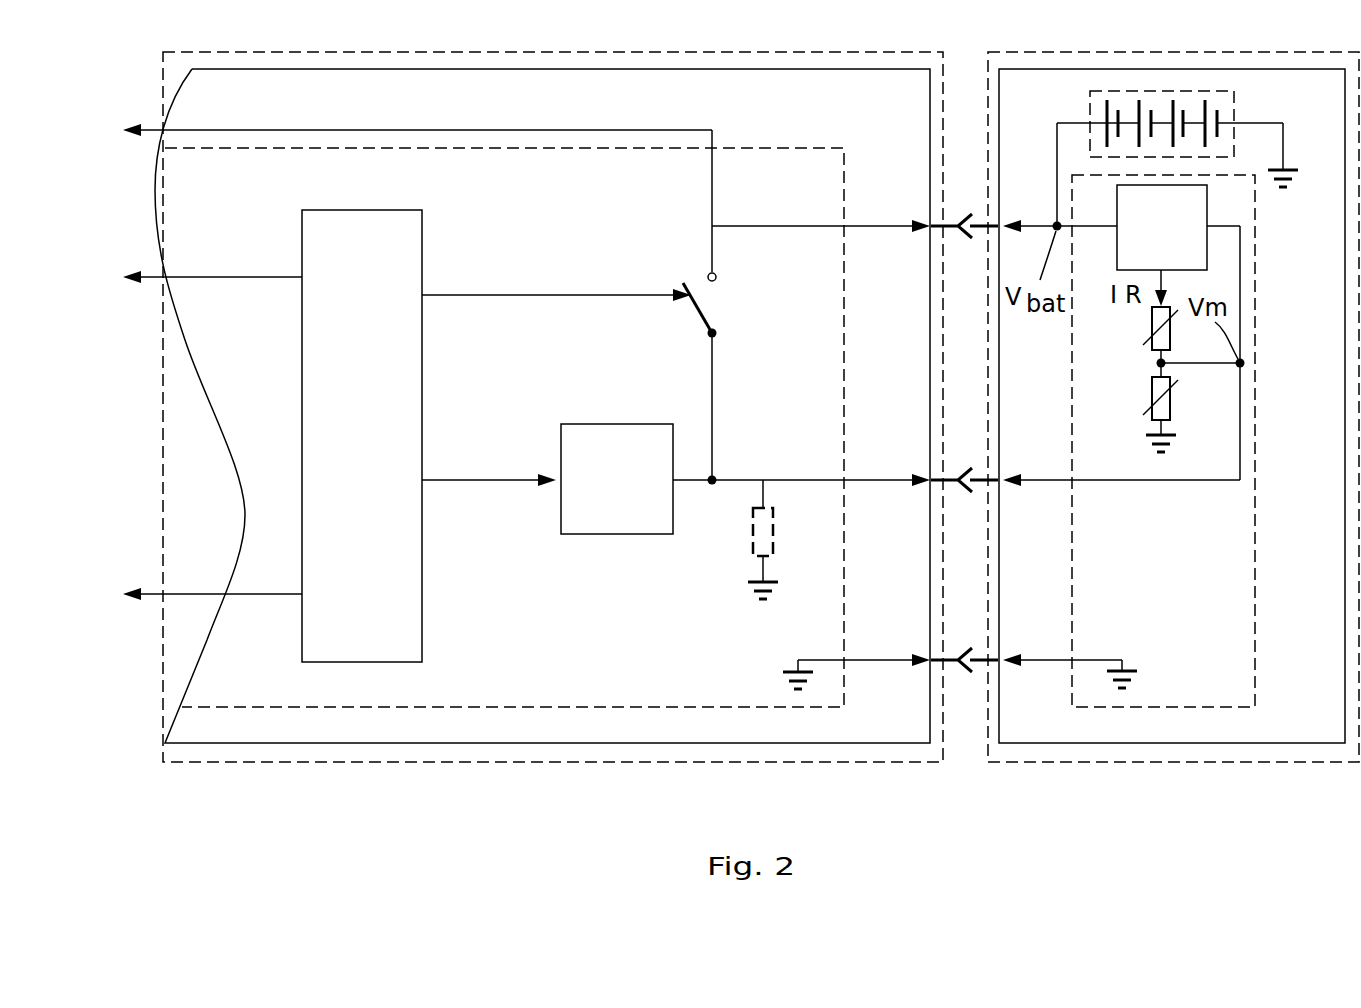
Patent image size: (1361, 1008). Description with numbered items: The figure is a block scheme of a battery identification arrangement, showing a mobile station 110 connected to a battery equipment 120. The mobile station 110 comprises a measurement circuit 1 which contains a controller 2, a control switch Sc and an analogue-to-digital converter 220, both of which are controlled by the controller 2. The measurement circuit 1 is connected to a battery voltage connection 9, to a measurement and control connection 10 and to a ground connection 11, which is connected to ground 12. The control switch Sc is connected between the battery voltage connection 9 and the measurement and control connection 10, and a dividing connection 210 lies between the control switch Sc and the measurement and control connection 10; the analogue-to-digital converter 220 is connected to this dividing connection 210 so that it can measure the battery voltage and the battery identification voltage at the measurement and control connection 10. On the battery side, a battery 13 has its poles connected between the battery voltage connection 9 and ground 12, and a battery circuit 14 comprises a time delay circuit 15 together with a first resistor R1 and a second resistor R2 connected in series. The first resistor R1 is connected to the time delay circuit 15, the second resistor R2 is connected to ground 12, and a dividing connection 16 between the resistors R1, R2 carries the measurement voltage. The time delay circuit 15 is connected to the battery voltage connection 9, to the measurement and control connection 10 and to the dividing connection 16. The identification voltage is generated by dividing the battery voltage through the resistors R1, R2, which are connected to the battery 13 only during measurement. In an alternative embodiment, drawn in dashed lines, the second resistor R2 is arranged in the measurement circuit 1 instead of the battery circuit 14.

The measurement circuit 1 is at (809, 140).
The controller 2 is at (422, 604).
The battery voltage connection 9 is at (966, 206).
The measurement and control connection 10 is at (966, 460).
The ground connection 11 is at (966, 640).
The ground 12 is at (781, 666).
The battery 13 is at (1246, 105).
The battery circuit 14 is at (1141, 718).
The time delay circuit 15 is at (1117, 252).
The dividing connection 16 is at (1157, 362).
The mobile station 110 is at (518, 772).
The battery equipment 120 is at (1262, 775).
The dividing connection 210 is at (750, 445).
The analogue-to-digital converter 220 is at (620, 535).
The control switch Sc is at (714, 309).
The first resistor R1 is at (1151, 330).
The second resistor R2 is at (774, 526).